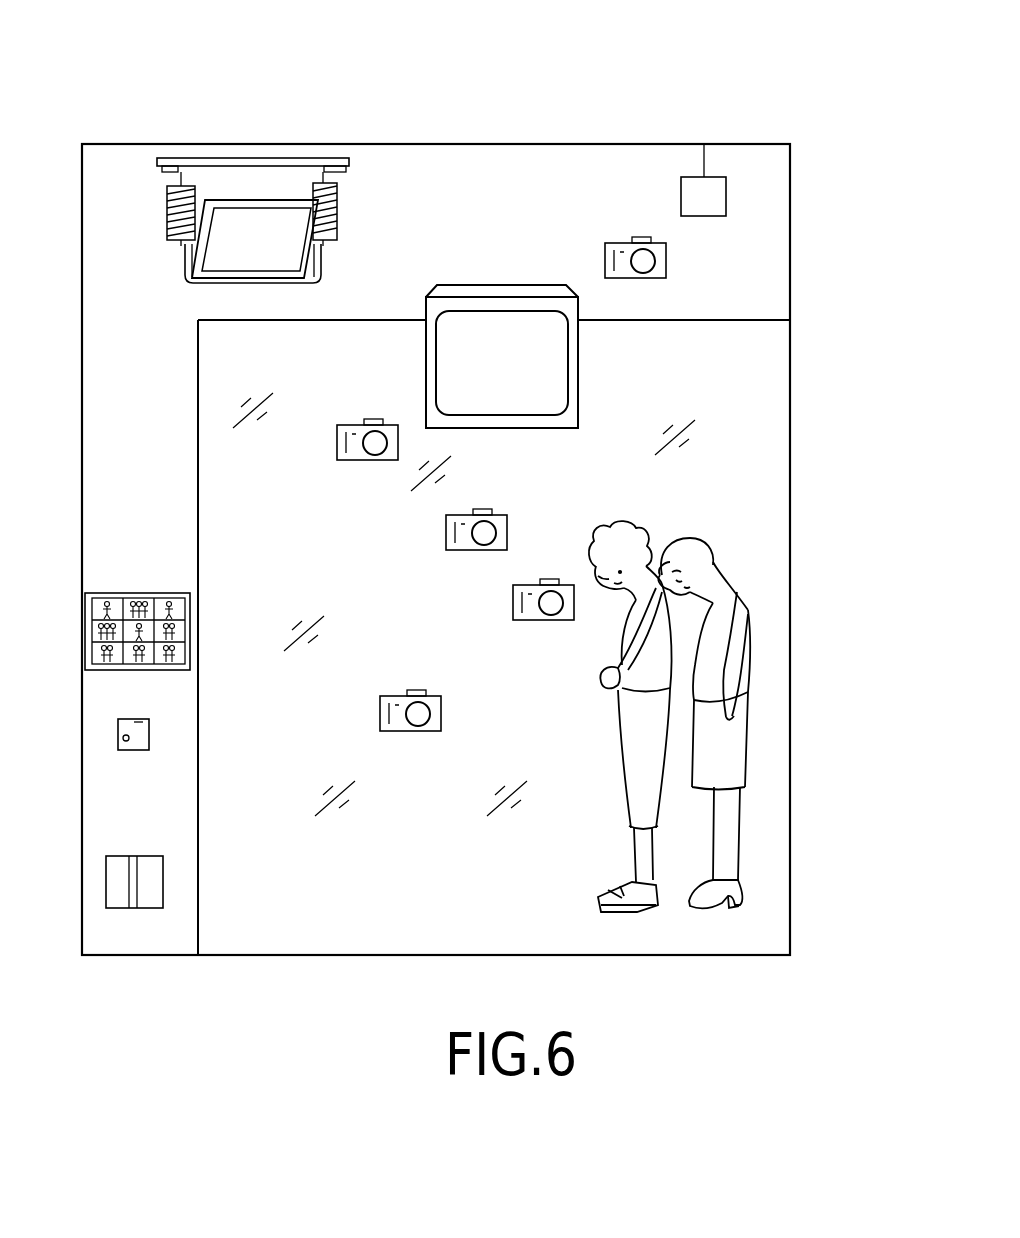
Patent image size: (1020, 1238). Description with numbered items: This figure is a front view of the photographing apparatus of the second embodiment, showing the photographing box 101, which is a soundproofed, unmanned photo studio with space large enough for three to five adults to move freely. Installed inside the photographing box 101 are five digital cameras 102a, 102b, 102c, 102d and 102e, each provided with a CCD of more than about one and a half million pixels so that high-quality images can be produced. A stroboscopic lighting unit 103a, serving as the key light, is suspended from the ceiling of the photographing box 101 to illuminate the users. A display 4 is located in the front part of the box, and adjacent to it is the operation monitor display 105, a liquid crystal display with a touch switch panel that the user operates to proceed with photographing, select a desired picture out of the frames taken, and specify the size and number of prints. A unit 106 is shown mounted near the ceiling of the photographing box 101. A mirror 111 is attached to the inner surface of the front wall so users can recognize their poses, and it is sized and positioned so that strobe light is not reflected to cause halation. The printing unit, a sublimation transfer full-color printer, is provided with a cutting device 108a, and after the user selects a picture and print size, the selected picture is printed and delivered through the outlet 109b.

The photographing box 101 is at (640, 143).
The camera 102a is at (615, 243).
The camera 102b is at (348, 425).
The camera 102c is at (505, 515).
The camera 102d is at (531, 620).
The camera 102e is at (441, 711).
The stroboscopic lighting unit 103a is at (290, 276).
The display device 4 is at (578, 352).
The operation monitor display 105 is at (168, 593).
The controller 106 is at (727, 197).
The cutting device 108a is at (149, 722).
The outlet 109b is at (157, 882).
The mirror 111 is at (786, 375).